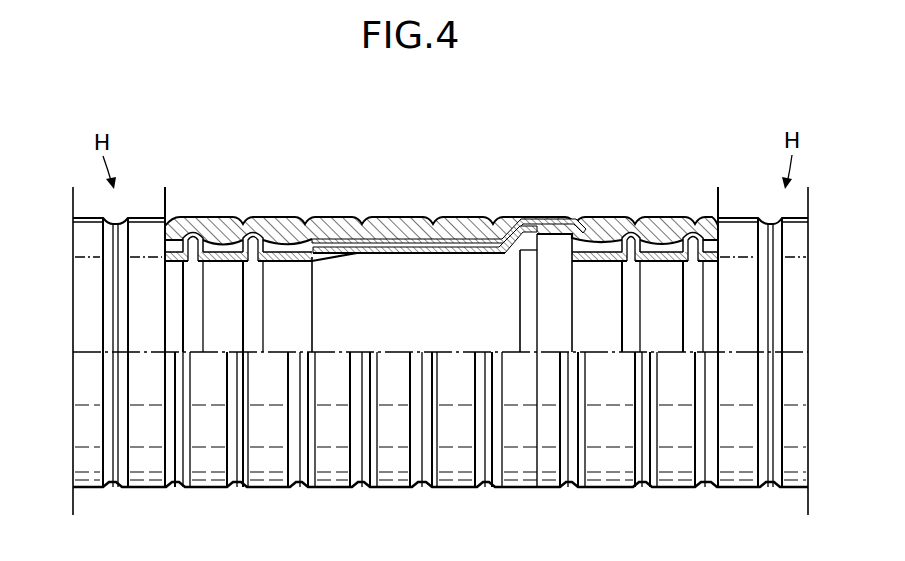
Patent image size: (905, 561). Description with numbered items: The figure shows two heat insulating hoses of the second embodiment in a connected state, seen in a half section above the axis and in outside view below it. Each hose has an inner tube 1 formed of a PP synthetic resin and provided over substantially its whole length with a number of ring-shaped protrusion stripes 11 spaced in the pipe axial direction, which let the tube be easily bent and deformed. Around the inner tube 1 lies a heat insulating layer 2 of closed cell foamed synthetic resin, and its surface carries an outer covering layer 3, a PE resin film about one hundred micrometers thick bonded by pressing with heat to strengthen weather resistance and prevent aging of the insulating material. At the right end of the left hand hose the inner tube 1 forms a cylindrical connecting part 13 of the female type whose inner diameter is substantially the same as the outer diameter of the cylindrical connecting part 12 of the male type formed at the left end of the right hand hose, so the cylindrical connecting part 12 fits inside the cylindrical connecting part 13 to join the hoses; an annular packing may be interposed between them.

The inner tube 1 is at (288, 251).
The heat insulating layer 2 is at (147, 220).
The outer covering layer 3 is at (220, 220).
The ring-shaped protrusion stripes 11 is at (192, 230).
The cylindrical connecting part of the male type 12 is at (452, 247).
The cylindrical connecting part of the female type 13 is at (388, 239).